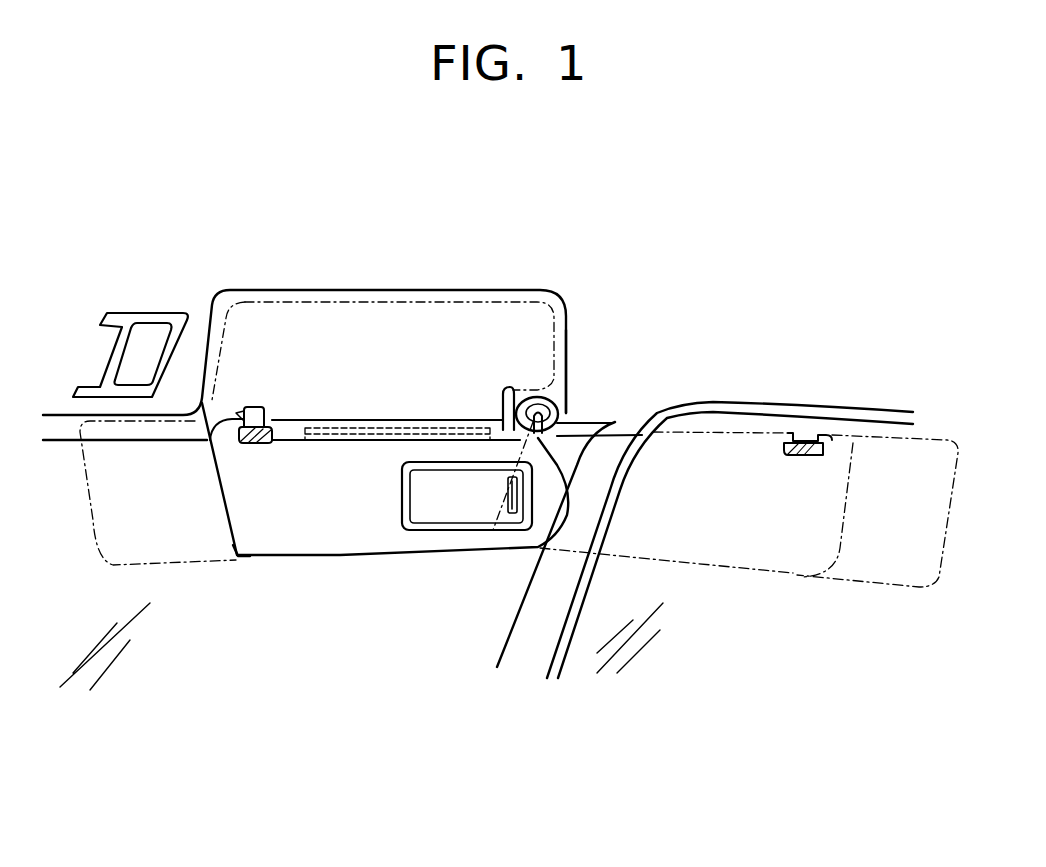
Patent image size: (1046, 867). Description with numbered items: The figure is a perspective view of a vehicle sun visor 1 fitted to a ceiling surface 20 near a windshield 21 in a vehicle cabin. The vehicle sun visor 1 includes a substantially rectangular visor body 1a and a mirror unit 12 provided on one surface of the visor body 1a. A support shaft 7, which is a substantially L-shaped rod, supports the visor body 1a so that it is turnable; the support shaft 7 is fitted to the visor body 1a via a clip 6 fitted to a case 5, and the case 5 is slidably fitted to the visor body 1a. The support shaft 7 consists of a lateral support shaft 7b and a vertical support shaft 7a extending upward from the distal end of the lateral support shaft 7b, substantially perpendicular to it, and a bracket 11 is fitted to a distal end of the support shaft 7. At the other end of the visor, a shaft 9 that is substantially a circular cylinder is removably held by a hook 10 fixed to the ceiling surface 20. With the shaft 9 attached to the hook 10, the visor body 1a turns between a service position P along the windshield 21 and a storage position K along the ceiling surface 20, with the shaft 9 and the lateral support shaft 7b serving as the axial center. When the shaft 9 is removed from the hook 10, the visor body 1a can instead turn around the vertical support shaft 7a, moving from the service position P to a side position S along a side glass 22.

The vehicle sun visor 1 is at (247, 612).
The visor body 1a is at (234, 562).
The case 5 is at (364, 434).
The clip 6 is at (377, 415).
The support shaft 7 is at (549, 430).
The vertical support shaft 7a is at (563, 414).
The lateral support shaft 7b is at (509, 387).
The shaft 9 is at (271, 417).
The hook 10 is at (238, 407).
The bracket 11 is at (568, 393).
The mirror unit 12 is at (420, 540).
The ceiling surface 20 is at (347, 223).
The windshield 21 is at (78, 688).
The side glass 22 is at (697, 632).
The storage position K is at (425, 352).
The service position P is at (359, 533).
The side position S is at (770, 560).